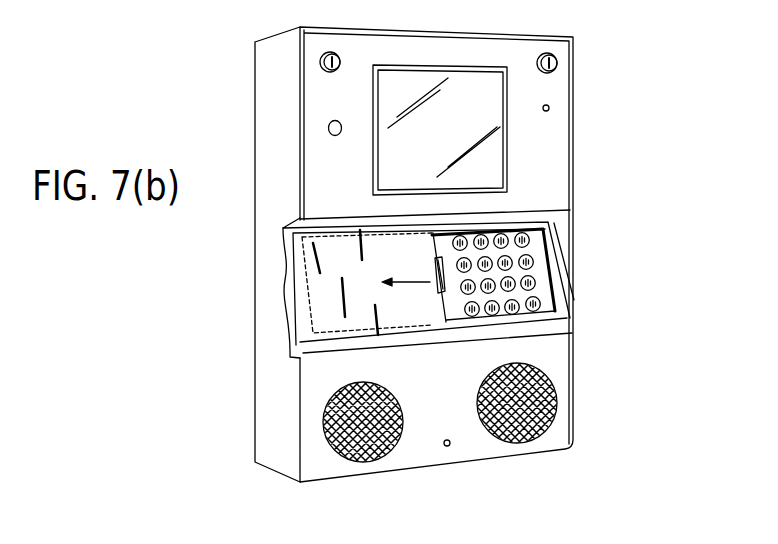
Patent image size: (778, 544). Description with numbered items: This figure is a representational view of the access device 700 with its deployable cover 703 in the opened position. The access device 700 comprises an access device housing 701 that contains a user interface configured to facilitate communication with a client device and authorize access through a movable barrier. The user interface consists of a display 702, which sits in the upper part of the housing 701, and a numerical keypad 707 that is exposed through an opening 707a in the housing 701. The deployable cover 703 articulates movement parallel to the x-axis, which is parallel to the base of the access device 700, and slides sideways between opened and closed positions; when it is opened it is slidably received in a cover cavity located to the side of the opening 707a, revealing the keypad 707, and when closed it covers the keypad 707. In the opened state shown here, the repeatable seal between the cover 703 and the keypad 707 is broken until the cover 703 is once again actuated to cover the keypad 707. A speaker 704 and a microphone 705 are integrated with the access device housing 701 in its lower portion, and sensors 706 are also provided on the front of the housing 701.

The access device 700 is at (157, 426).
The access device housing 701 is at (258, 63).
The display 702 is at (508, 167).
The deployable cover 703 is at (325, 308).
The speaker 704 is at (368, 463).
The microphone 705 is at (450, 446).
The sensors 706 is at (549, 108).
The numerical keypad 707 is at (546, 303).
The opening 707a is at (534, 243).